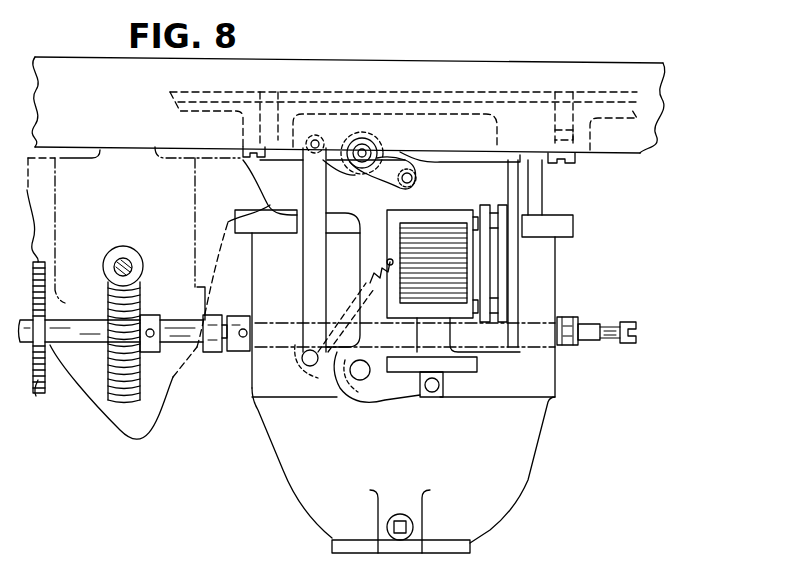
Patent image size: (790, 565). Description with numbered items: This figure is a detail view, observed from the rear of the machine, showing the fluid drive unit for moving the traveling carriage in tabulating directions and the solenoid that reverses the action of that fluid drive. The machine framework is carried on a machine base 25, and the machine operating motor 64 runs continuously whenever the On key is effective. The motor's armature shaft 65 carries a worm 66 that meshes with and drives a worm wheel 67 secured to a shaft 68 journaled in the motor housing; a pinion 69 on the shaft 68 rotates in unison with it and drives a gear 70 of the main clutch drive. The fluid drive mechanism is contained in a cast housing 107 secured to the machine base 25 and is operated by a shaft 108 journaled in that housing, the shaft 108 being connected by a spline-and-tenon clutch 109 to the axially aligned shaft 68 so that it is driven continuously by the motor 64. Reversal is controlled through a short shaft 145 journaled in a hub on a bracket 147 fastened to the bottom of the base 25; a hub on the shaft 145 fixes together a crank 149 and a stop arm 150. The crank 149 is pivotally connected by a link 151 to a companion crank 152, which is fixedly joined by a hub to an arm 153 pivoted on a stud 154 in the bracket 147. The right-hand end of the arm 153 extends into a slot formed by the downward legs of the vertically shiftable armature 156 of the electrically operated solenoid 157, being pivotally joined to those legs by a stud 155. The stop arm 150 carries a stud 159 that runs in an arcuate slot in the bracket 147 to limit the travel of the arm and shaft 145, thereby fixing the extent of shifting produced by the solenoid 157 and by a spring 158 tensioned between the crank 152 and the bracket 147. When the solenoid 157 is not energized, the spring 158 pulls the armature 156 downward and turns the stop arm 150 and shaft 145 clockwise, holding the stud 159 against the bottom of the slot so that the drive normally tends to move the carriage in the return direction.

The machine base 25 is at (590, 76).
The machine operating motor 64 is at (74, 162).
The armature shaft 65 is at (133, 268).
The worm 66 is at (134, 254).
The worm wheel 67 is at (133, 298).
The shaft 68 is at (92, 330).
The pinion 69 is at (38, 393).
The gear 70 is at (45, 278).
The cast housing 107 is at (528, 440).
The shaft 108 is at (573, 348).
The spline-and-tenon clutch 109 is at (238, 317).
The short shaft 145 is at (363, 148).
The bracket 147 is at (512, 268).
The crank 149 is at (342, 128).
The stop arm 150 is at (396, 170).
The link 151 is at (303, 271).
The companion crank 152 is at (305, 368).
The arm 153 is at (385, 402).
The stud 154 is at (368, 362).
The stud 155 is at (440, 398).
The armature 156 is at (470, 366).
The solenoid 157 is at (443, 212).
The spring 158 is at (357, 290).
The stud 159 is at (392, 191).